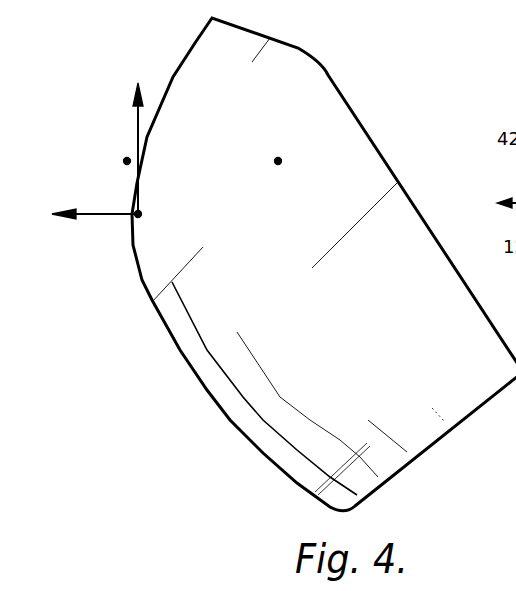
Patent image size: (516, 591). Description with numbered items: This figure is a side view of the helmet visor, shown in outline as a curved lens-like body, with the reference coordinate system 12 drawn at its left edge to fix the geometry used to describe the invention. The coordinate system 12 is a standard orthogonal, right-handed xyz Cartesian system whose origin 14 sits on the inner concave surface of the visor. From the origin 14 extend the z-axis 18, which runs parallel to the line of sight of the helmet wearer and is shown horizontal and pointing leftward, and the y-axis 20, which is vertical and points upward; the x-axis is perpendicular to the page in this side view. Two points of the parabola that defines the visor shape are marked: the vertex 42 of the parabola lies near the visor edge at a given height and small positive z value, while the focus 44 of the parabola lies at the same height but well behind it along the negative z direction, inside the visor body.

The coordinate system of spatial reference 12 is at (162, 187).
The origin 14 is at (141, 217).
The z-axis 18 is at (75, 215).
The y-axis 20 is at (137, 116).
The vertex 42 is at (127, 161).
The focus 44 is at (281, 157).